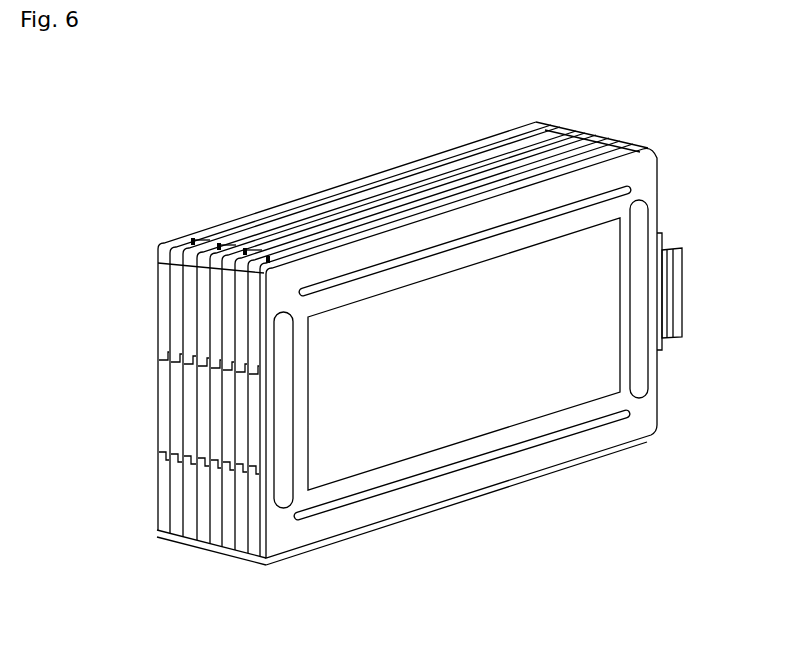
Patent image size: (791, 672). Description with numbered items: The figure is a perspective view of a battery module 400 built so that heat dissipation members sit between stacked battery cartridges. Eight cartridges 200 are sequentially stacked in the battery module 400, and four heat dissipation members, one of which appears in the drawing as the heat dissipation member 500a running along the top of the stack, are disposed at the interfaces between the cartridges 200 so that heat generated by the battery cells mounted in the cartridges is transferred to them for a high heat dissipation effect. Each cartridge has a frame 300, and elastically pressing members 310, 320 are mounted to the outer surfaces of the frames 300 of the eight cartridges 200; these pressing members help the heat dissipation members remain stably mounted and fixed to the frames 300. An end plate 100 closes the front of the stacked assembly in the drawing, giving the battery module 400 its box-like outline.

The battery module 400 is at (63, 88).
The end plate with window 100 is at (497, 353).
The cartridges 200 is at (175, 237).
The frames 300 is at (287, 518).
The elastically pressing member 310 is at (420, 482).
The elastically pressing member 320 is at (610, 192).
The top cover plate 500a is at (348, 174).